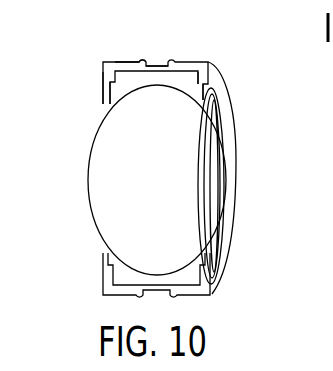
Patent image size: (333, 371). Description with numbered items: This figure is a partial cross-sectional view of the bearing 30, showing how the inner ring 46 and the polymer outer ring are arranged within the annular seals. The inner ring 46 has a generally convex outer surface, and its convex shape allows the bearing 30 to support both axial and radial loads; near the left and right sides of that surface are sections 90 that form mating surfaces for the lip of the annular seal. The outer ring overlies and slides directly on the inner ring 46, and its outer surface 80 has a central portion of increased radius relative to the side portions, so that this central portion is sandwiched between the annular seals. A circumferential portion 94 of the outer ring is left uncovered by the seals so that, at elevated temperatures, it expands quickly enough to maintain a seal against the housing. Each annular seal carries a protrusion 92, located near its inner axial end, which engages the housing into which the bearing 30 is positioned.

The bearing 30 is at (245, 158).
The inner ring 46 is at (86, 187).
The outer surface of the outer ring 80 is at (163, 62).
The sections of the outer surface 90 is at (104, 102).
The protrusion 92 is at (133, 62).
The circumferential portion 94 is at (145, 61).